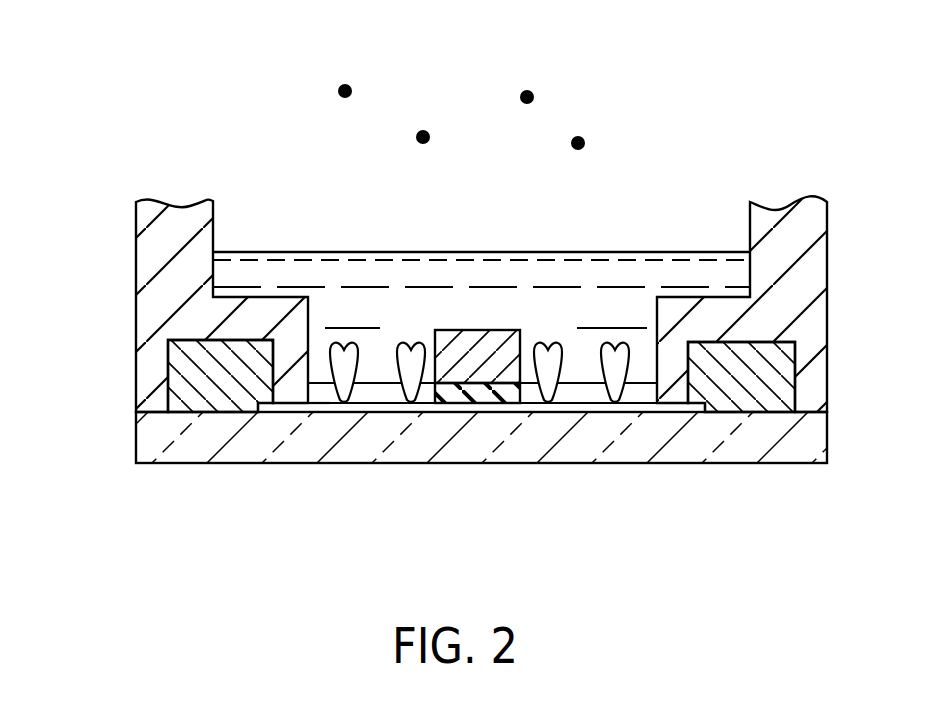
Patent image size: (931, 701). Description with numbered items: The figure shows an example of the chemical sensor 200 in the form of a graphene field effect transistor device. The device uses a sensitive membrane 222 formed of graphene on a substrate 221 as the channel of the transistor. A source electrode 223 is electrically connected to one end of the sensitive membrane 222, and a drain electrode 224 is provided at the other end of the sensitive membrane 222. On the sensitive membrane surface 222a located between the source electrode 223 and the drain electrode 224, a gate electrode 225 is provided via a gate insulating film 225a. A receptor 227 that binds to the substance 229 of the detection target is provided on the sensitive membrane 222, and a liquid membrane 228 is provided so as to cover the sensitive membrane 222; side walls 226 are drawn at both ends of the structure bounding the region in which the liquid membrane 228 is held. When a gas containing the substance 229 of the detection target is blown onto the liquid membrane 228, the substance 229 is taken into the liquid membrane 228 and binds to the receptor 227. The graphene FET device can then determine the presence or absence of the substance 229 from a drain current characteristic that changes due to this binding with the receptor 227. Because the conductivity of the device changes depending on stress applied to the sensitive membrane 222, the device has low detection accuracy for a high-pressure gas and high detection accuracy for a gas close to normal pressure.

The chemical sensor 200 is at (484, 98).
The substrate 221 is at (145, 440).
The sensitive membrane 222 is at (567, 410).
The sensitive membrane surface 222a is at (321, 395).
The source electrode 223 is at (227, 388).
The drain electrode 224 is at (745, 390).
The gate electrode 225 is at (477, 359).
The gate insulating film 225a is at (473, 400).
The side wall 226 is at (153, 306).
The receptor 227 is at (410, 340).
The liquid membrane 228 is at (618, 310).
The substance of the detection target 229 is at (345, 84).